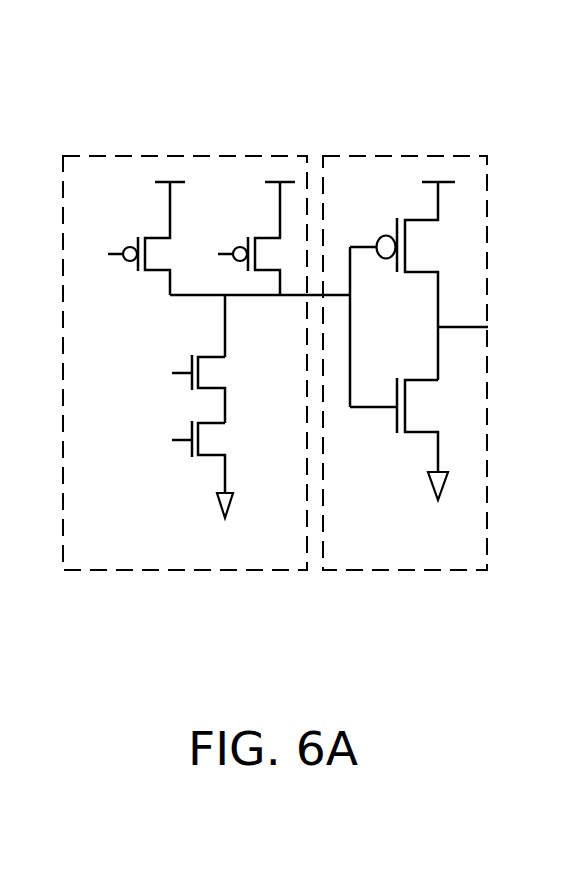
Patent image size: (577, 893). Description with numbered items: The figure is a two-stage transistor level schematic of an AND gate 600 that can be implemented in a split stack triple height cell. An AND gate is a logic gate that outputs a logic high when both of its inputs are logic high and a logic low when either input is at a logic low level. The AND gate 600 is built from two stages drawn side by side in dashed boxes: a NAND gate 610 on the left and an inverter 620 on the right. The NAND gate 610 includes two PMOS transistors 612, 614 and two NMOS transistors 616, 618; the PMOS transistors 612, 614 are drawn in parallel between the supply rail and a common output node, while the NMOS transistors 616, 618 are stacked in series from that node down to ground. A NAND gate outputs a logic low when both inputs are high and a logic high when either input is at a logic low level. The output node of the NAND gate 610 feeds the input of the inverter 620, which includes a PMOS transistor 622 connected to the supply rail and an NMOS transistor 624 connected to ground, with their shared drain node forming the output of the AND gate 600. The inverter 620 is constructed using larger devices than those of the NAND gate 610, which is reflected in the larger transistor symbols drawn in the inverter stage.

The AND gate 600 is at (376, 108).
The NAND gate 610 is at (127, 554).
The PMOS transistor 612 is at (132, 246).
The PMOS transistor 614 is at (242, 246).
The NMOS transistor 616 is at (198, 355).
The NMOS transistor 618 is at (198, 457).
The inverter 620 is at (385, 553).
The PMOS transistor 622 is at (385, 234).
The NMOS transistor 624 is at (400, 433).